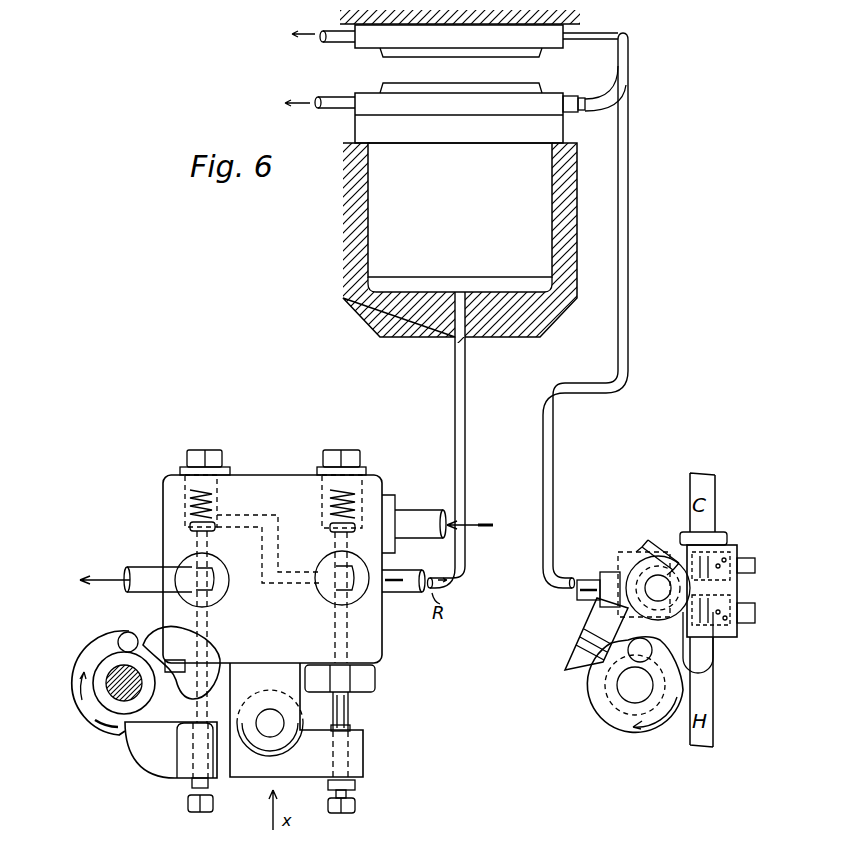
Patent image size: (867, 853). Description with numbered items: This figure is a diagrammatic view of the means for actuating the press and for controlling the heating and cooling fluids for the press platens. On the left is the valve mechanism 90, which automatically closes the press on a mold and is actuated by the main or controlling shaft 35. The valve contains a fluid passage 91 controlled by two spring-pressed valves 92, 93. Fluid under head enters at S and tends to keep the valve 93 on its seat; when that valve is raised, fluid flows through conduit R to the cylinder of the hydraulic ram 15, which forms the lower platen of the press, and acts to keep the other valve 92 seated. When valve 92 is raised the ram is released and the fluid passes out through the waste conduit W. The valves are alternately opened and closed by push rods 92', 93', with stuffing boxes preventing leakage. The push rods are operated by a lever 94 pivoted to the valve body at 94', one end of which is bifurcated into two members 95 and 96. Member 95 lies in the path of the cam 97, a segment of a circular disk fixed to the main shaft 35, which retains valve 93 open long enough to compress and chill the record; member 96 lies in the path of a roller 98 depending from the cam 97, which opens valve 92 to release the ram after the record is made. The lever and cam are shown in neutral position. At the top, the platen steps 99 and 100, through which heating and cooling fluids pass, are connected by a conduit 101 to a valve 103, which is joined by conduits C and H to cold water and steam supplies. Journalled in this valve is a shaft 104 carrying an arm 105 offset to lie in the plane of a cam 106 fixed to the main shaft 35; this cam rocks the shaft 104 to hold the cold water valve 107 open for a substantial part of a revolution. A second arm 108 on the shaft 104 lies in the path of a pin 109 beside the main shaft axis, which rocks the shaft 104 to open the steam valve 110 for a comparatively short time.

The hydraulic ram 15 is at (460, 243).
The main shaft 35 is at (108, 673).
The valve mechanism 90 is at (286, 556).
The fluid passage 91 is at (265, 513).
The spring-pressed valve 92 is at (214, 518).
The spring-pressed valve 93 is at (324, 518).
The push rod 92' is at (225, 627).
The push rod 93' is at (354, 654).
The lever 94 is at (317, 738).
The pivot 94' is at (270, 710).
The lever member 95 is at (142, 762).
The lever member 96 is at (185, 641).
The cam 97 is at (75, 697).
The roller 98 is at (122, 638).
The platen step 99 is at (455, 41).
The platen step 100 is at (455, 104).
The conduit 101 is at (632, 315).
The valve 103 is at (736, 597).
The shaft 104 is at (657, 588).
The arm 105 is at (566, 660).
The cam 106 is at (622, 738).
The cold water valve 107 is at (726, 553).
The second arm 108 is at (702, 672).
The pin 109 is at (630, 653).
The steam valve 110 is at (732, 640).